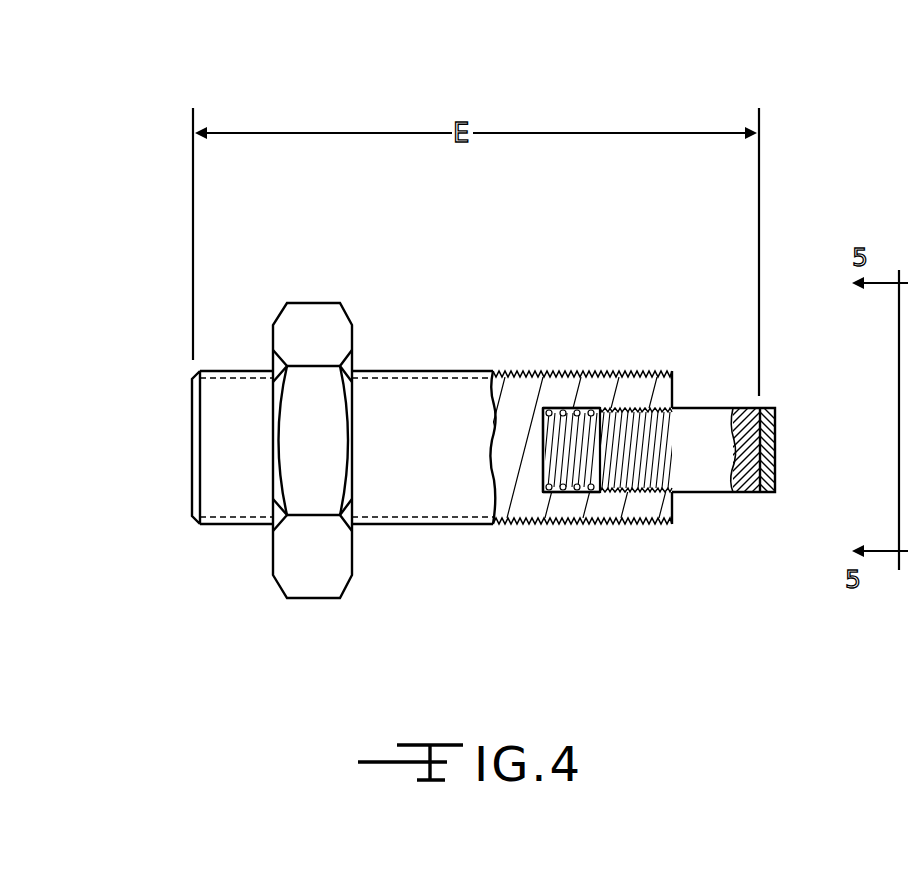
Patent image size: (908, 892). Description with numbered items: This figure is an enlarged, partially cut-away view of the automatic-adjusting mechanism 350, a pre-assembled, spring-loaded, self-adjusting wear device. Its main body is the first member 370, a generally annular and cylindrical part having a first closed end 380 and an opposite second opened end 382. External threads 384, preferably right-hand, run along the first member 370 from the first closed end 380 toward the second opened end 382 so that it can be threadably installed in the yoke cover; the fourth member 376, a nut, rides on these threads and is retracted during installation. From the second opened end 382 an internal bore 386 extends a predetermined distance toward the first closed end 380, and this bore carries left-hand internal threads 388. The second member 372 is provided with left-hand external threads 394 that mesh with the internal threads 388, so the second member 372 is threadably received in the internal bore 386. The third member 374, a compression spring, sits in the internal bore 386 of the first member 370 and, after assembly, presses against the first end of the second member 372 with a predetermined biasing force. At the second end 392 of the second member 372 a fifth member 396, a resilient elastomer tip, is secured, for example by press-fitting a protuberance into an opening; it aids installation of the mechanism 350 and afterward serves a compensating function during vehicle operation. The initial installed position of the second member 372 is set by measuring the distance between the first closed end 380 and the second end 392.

The automatic-adjusting mechanism 350 is at (160, 222).
The first member 370 is at (226, 366).
The fourth member 376 is at (314, 300).
The first closed end 380 is at (191, 445).
The external threads 384 is at (518, 373).
The second opened end 382 is at (676, 505).
The third member 374 is at (563, 432).
The internal bore 386 is at (562, 491).
The external threads 394 is at (607, 494).
The internal threads 388 is at (640, 494).
The second member 372 is at (696, 405).
The second end 392 is at (785, 404).
The fifth member 396 is at (750, 451).